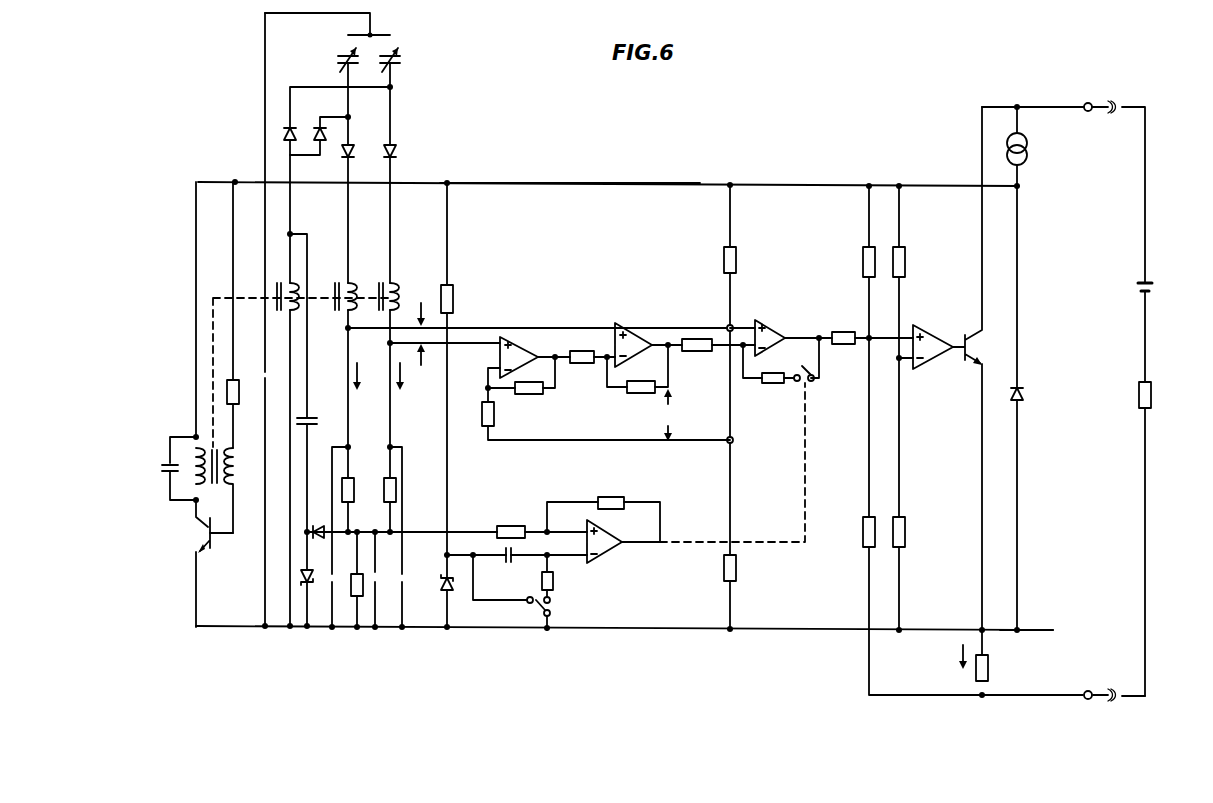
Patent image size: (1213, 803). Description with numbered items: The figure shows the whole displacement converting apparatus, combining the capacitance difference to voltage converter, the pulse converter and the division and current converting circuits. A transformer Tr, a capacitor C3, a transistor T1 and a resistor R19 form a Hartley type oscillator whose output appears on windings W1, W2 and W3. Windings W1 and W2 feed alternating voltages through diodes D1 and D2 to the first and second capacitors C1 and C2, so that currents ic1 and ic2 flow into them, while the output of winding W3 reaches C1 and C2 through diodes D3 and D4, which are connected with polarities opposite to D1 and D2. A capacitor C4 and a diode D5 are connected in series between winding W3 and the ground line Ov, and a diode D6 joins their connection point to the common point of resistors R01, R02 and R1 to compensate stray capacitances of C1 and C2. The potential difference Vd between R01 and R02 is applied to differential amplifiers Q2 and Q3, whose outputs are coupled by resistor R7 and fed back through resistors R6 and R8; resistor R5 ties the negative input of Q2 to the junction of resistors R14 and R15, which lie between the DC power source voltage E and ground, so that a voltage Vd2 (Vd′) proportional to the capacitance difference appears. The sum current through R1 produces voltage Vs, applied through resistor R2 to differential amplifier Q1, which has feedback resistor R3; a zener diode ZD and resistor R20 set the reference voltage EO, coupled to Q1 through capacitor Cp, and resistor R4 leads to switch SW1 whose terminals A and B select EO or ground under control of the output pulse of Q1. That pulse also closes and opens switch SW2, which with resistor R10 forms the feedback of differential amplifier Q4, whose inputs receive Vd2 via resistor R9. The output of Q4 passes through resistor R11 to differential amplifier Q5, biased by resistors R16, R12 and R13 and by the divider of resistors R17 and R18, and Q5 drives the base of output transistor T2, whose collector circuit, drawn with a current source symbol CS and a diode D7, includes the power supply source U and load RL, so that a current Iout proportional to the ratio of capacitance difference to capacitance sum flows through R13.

The first capacitor C1 is at (406, 57).
The second capacitor C2 is at (344, 62).
The capacitor C3 is at (167, 464).
The capacitor C4 is at (297, 421).
The capacitor Cp is at (511, 562).
The diode D1 is at (395, 150).
The diode D2 is at (354, 150).
The diode D3 is at (286, 135).
The diode D4 is at (320, 139).
The diode D5 is at (301, 593).
The diode D6 is at (325, 532).
The zener diode ZD is at (450, 595).
The transformer winding W1 is at (392, 290).
The transformer winding W2 is at (352, 288).
The transformer winding W3 is at (280, 281).
The transformer Tr is at (215, 495).
The transistor T1 is at (202, 548).
The output transistor T2 is at (985, 345).
The resistor R1 is at (357, 596).
The resistor R2 is at (518, 523).
The resistor R3 is at (628, 480).
The resistor R4 is at (550, 588).
The resistor R5 is at (485, 427).
The resistor R6 is at (541, 392).
The resistor R7 is at (580, 350).
The resistor R8 is at (637, 394).
The resistor R9 is at (698, 339).
The resistor R10 is at (773, 383).
The resistor R11 is at (853, 310).
The resistor R12 is at (865, 538).
The resistor R13 is at (988, 663).
The resistor R14 is at (736, 259).
The resistor R15 is at (736, 569).
The resistor R16 is at (865, 262).
The resistor R17 is at (904, 259).
The resistor R18 is at (905, 524).
The resistor R19 is at (228, 392).
The resistor R20 is at (453, 295).
The resistor R01 is at (356, 496).
The resistor R02 is at (396, 499).
The load RL is at (1151, 392).
The differential amplifier Q1 is at (618, 552).
The differential amplifier Q2 is at (520, 343).
The differential amplifier Q3 is at (631, 330).
The differential amplifier Q4 is at (780, 306).
The differential amplifier Q5 is at (945, 314).
The switch SW1 is at (541, 615).
The switch SW2 is at (810, 395).
The switching terminal A is at (525, 600).
The switching terminal B is at (553, 590).
The potential difference Vd is at (422, 334).
The difference voltage Vd2 is at (674, 415).
The voltage Vs is at (462, 537).
The reference voltage EO is at (445, 560).
The DC power source voltage E is at (570, 170).
The zero volt line Ov is at (1044, 623).
The current ic1 is at (395, 366).
The current ic2 is at (361, 375).
The output current Iout is at (936, 658).
The power supply source U is at (1155, 275).
The current source CS is at (1017, 149).
The diode D7 is at (1017, 394).